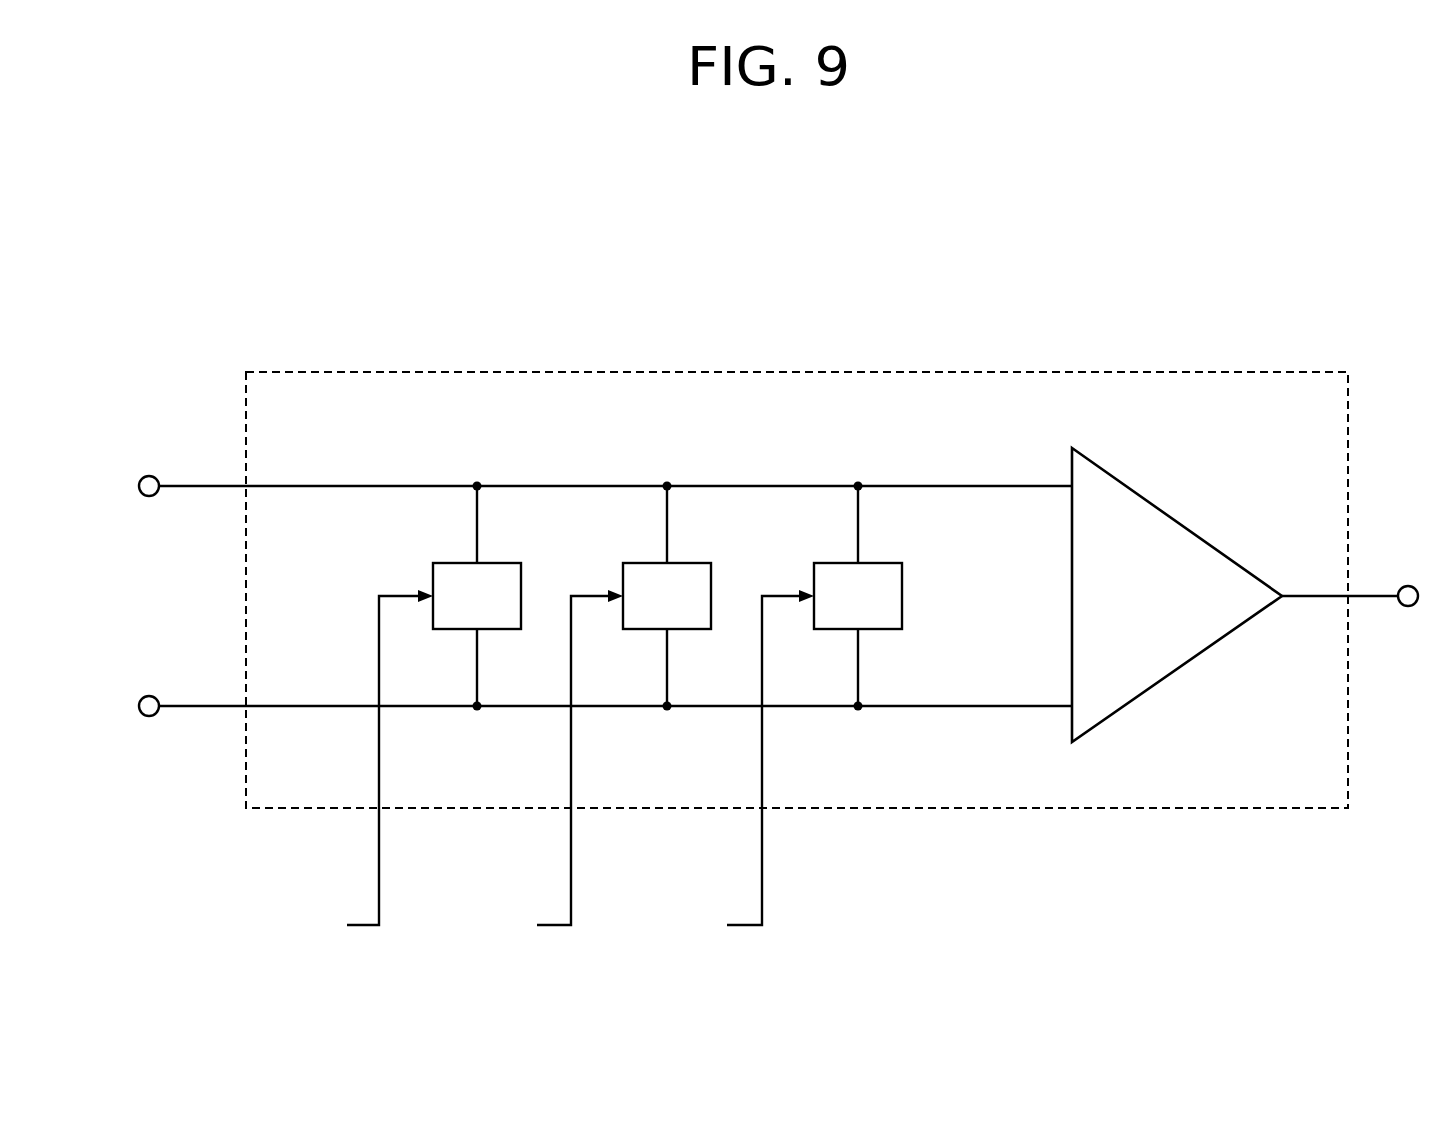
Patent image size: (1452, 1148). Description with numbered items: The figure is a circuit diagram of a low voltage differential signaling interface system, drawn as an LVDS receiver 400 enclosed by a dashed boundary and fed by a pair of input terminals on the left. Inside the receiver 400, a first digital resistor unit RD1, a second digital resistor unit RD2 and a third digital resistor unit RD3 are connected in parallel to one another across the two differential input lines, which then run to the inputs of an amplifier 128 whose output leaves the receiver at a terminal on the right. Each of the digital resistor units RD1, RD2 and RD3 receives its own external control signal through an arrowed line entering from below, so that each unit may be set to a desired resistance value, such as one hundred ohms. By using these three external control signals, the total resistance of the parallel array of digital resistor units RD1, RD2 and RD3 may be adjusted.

The LVDS receiver 400 is at (797, 372).
The amplifier 128 is at (1180, 520).
The first digital resistor unit RD1 is at (477, 596).
The second digital resistor unit RD2 is at (667, 596).
The third digital resistor unit RD3 is at (858, 596).